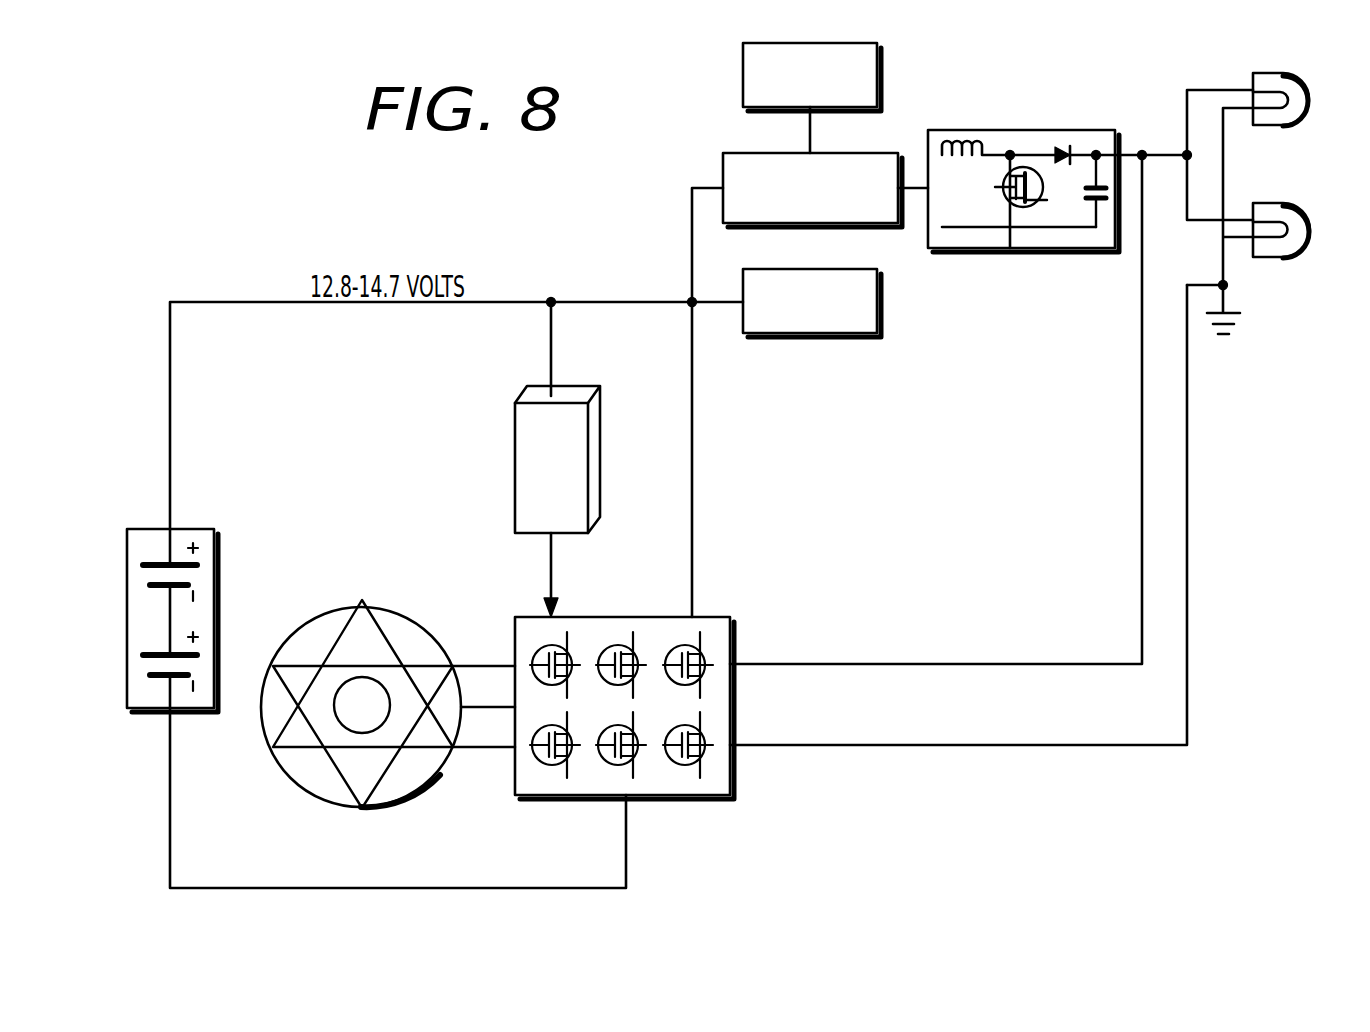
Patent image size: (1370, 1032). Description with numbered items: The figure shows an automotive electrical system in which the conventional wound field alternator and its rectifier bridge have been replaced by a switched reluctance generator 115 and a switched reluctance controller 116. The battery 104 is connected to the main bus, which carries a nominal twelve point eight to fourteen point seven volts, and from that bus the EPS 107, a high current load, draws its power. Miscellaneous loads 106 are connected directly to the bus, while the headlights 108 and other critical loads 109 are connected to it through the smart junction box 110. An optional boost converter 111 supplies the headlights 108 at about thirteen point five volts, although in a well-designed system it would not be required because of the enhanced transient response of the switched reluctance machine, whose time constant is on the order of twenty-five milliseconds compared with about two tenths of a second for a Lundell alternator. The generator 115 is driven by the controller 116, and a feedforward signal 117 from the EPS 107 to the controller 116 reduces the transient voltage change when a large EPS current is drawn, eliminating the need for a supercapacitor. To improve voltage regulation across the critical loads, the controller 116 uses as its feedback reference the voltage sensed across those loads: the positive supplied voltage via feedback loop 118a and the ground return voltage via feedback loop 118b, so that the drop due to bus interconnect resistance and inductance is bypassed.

The battery 104 is at (127, 641).
The miscellaneous loads 106 is at (822, 337).
The EPS 107 is at (594, 450).
The headlights 108 is at (1293, 258).
The other critical loads 109 is at (878, 63).
The smart junction box 110 is at (805, 227).
The boost converter 111 is at (1110, 128).
The switched reluctance generator 115 is at (362, 815).
The switched reluctance controller 116 is at (680, 797).
The feedforward signal 117 is at (551, 582).
The feedback loop 118a is at (860, 665).
The feedback loop 118b is at (868, 746).